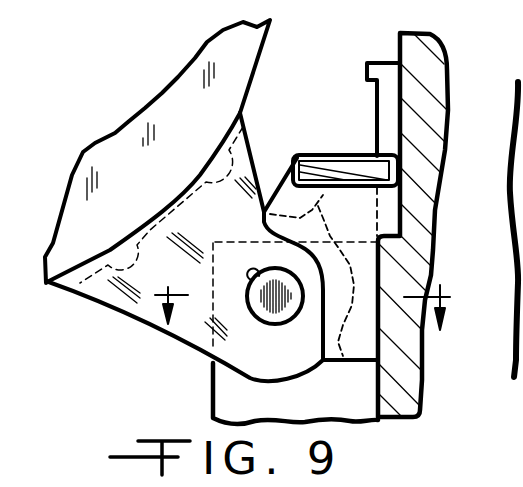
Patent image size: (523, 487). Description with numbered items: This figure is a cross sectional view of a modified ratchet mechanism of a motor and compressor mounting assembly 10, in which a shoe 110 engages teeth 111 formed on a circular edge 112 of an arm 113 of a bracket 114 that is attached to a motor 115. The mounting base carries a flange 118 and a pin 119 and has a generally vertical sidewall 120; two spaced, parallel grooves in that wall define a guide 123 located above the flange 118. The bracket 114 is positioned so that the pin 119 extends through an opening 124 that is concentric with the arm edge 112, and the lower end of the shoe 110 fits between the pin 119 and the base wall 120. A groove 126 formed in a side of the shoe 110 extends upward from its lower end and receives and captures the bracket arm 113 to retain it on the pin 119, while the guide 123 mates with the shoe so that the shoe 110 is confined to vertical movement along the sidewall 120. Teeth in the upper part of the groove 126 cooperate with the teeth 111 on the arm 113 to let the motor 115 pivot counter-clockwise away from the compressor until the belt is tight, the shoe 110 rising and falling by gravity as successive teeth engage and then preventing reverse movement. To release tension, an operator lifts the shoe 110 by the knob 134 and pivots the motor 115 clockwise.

The fastening assembly 10 is at (297, 326).
The shoe 110 is at (283, 182).
The teeth 111 is at (330, 200).
The circular edge 112 is at (308, 372).
The arm 113 is at (185, 345).
The bracket 114 is at (112, 305).
The motor 115 is at (265, 58).
The flange 118 is at (213, 394).
The pin 119 is at (252, 322).
The sidewall 120 is at (378, 420).
The guide 123 is at (377, 92).
The opening 124 is at (257, 276).
The groove 126 is at (347, 362).
The knob 134 is at (327, 162).